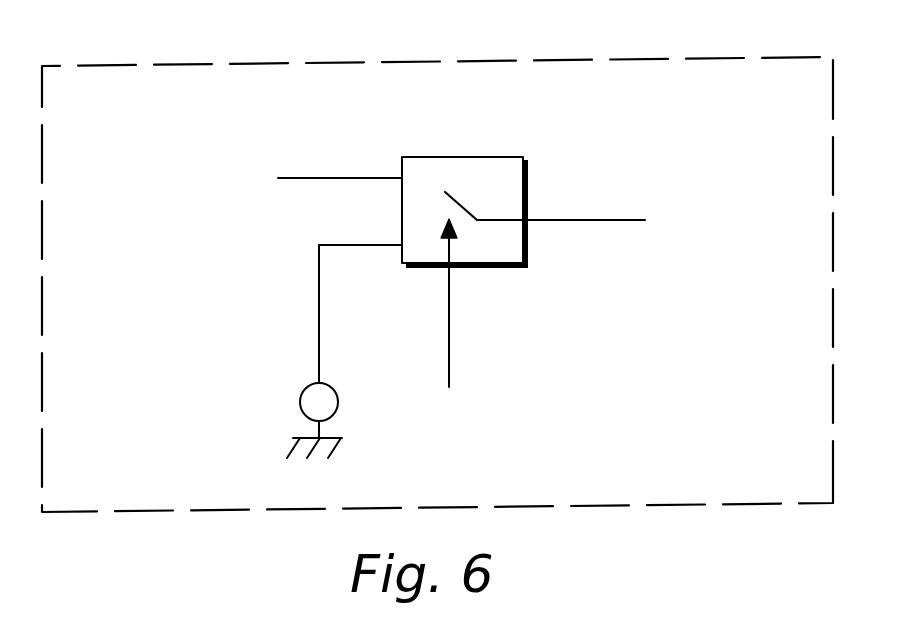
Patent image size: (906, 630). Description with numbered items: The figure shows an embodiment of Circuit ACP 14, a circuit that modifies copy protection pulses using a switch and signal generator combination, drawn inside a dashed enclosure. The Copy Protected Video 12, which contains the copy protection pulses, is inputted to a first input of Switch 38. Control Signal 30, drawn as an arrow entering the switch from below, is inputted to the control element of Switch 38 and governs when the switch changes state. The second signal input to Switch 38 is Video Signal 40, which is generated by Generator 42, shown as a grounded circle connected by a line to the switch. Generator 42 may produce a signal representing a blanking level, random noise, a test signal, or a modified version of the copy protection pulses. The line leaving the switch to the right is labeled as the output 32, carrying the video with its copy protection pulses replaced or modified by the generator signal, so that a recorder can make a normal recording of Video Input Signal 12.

The Circuit ACP 14 is at (184, 65).
The Copy Protected Video 12 is at (329, 176).
The Switch 38 is at (527, 184).
The output 32 is at (634, 219).
The Control Signal 30 is at (443, 332).
The Video Signal 40 is at (357, 243).
The Generator 42 is at (196, 390).